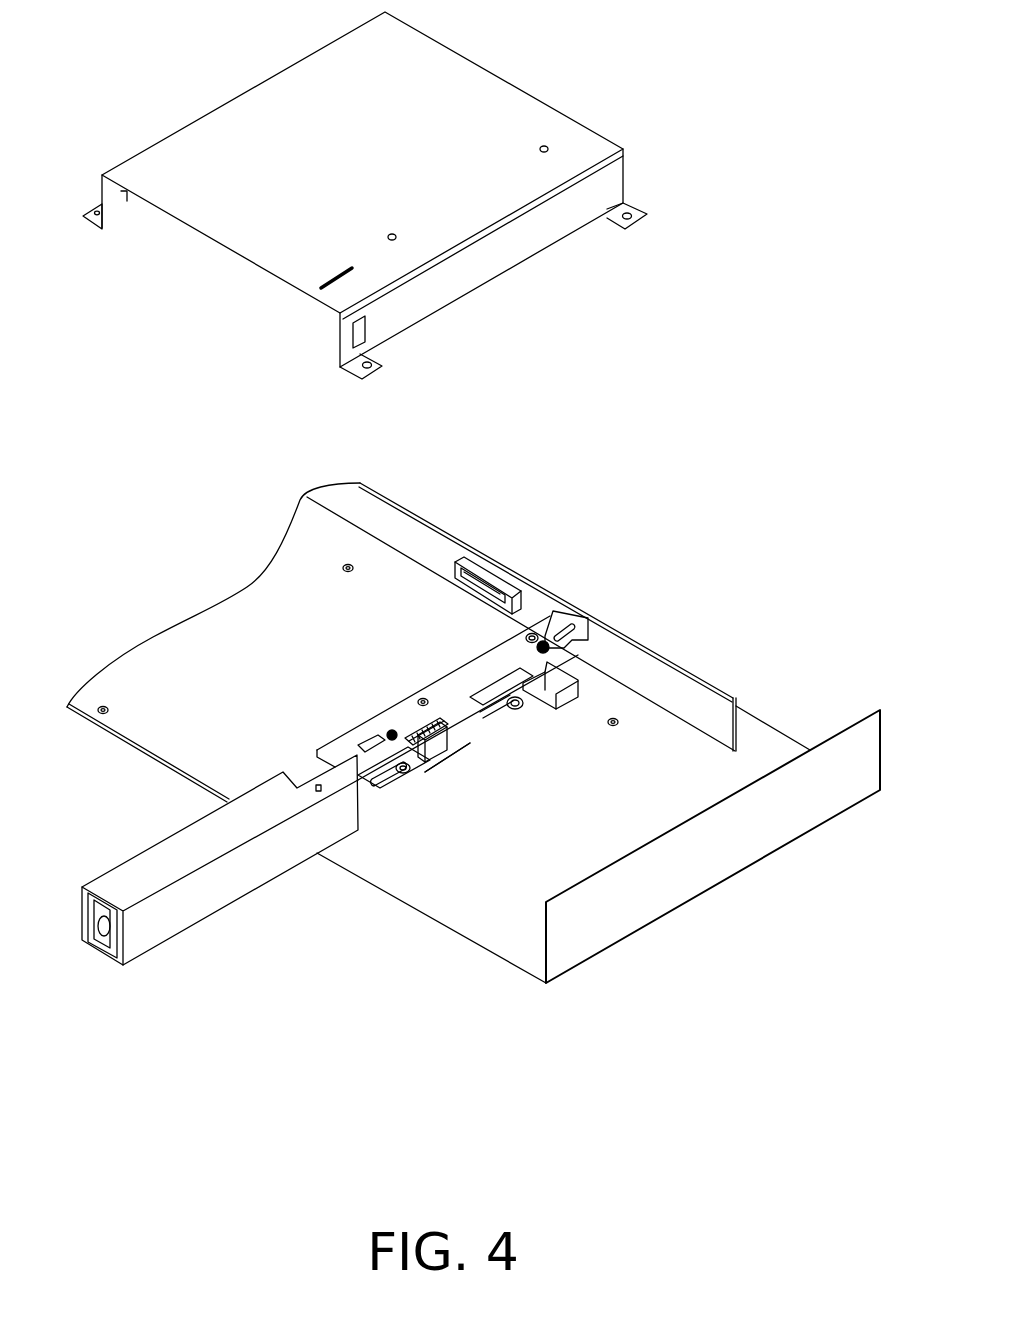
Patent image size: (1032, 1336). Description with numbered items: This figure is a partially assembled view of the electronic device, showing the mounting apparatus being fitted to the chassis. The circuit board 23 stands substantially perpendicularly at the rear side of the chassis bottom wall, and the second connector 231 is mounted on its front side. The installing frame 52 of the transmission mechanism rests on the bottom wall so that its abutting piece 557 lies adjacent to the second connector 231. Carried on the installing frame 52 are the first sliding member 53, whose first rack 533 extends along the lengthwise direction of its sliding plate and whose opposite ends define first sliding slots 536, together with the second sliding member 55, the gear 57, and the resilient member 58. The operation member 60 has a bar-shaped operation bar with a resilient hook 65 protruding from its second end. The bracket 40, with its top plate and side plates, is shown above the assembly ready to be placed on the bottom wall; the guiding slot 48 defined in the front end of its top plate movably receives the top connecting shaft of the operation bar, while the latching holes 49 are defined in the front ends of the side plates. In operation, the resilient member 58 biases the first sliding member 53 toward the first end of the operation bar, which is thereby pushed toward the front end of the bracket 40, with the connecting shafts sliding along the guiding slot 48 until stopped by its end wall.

The bracket 40 is at (507, 112).
The guiding slot 48 is at (323, 278).
The latching hole 49 is at (363, 330).
The circuit board 23 is at (398, 530).
The second connector 231 is at (483, 590).
The installing frame 52 is at (500, 660).
The abutting piece 557 is at (560, 610).
The second sliding member 55 is at (580, 633).
The gear 57 is at (545, 676).
The first sliding slot 536 is at (513, 730).
The resilient member 58 is at (427, 773).
The first sliding member 53 is at (445, 735).
The first rack 533 is at (480, 748).
The resilient hook 65 is at (100, 947).
The operation member 60 is at (207, 898).